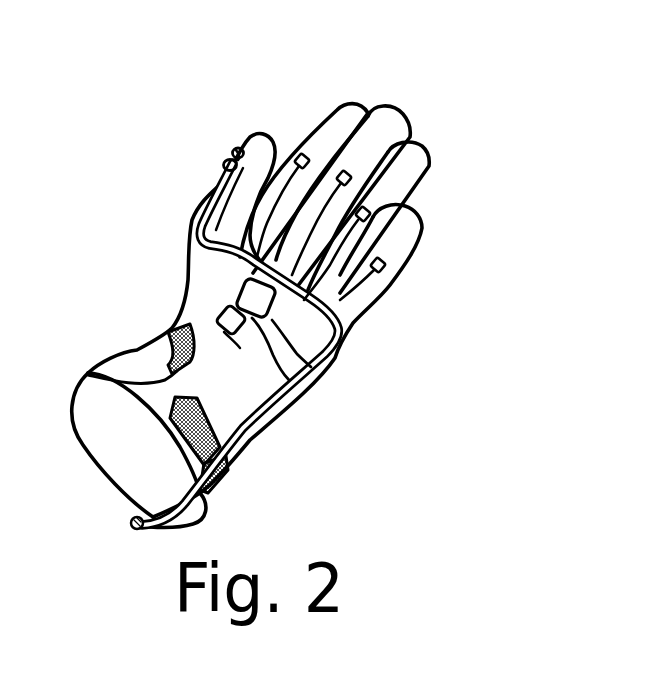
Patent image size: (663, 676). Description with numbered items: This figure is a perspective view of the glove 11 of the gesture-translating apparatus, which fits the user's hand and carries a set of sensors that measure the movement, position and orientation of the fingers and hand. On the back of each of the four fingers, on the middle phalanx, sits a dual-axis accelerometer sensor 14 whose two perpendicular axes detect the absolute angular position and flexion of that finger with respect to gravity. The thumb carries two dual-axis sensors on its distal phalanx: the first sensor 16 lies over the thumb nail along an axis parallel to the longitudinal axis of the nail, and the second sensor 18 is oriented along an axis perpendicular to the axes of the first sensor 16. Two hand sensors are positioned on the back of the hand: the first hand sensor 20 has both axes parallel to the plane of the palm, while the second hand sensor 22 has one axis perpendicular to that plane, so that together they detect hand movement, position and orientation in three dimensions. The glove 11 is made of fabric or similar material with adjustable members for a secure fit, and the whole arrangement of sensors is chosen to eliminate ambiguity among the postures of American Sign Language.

The glove 11 is at (348, 347).
The sensor 14 is at (347, 174).
The first sensor 16 is at (235, 150).
The second sensor 18 is at (226, 172).
The first hand sensor 20 is at (241, 294).
The second hand sensor 22 is at (220, 313).